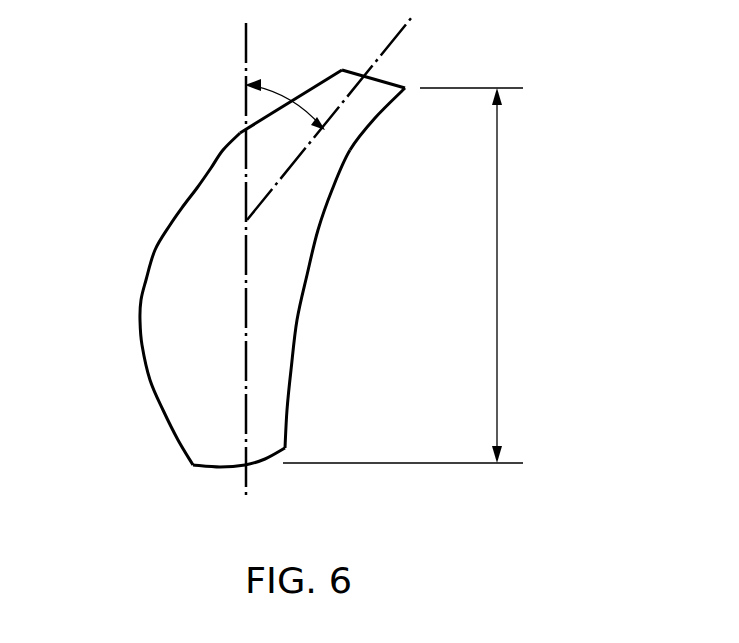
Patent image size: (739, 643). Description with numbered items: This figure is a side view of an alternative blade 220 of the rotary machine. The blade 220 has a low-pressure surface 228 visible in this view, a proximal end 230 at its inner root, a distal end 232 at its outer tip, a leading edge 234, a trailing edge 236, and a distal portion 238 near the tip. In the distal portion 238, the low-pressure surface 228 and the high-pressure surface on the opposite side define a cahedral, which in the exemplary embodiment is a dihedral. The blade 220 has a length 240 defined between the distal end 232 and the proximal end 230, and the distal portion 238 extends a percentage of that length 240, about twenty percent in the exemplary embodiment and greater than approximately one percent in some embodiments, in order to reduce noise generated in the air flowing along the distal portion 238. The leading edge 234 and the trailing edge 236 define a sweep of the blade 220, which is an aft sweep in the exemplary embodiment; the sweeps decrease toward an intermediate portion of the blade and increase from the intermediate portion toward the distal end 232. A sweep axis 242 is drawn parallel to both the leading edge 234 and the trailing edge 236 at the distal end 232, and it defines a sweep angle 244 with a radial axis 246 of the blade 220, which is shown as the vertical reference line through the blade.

The blade 220 is at (260, 257).
The low-pressure surface 228 is at (180, 262).
The proximal end 230 is at (260, 460).
The distal end 232 is at (357, 72).
The leading edge 234 is at (240, 131).
The trailing edge 236 is at (295, 330).
The distal portion 238 is at (338, 128).
The length 240 is at (497, 277).
The sweep axis 242 is at (410, 28).
The sweep angle 244 is at (290, 80).
The radial axis 246 is at (245, 70).